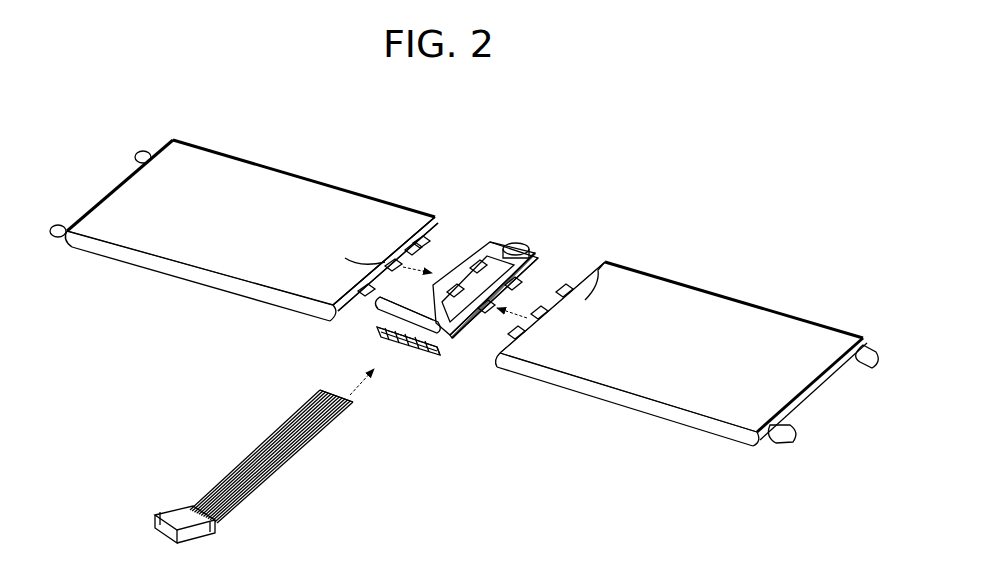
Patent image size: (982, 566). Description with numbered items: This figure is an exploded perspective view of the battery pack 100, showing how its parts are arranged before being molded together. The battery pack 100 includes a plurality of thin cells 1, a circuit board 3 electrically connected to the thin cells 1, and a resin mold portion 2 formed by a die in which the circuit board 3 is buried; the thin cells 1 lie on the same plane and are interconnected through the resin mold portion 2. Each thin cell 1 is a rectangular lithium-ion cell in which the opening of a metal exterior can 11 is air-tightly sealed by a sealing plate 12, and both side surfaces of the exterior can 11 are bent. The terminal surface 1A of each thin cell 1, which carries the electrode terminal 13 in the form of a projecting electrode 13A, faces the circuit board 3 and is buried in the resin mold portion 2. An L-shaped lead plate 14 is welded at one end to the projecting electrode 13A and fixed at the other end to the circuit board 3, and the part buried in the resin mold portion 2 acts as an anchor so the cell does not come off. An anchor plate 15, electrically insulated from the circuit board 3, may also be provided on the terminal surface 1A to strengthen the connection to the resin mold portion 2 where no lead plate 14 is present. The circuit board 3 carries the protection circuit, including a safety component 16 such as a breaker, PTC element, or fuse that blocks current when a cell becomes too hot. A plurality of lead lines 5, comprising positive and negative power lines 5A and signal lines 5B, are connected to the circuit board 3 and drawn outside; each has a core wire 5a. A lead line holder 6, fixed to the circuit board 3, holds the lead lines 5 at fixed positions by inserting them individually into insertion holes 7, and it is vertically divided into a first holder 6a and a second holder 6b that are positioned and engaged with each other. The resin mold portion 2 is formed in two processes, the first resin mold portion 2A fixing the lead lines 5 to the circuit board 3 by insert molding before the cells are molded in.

The battery pack 100 is at (652, 136).
The thin cell 1 is at (293, 147).
The exterior can 11 is at (246, 226).
The projecting electrode 13A is at (400, 262).
The electrode terminal 13 is at (366, 261).
The sealing plate 12 is at (410, 250).
The lead plate 14 is at (365, 268).
The anchor plate 15 is at (345, 258).
The circuit board 3 is at (470, 265).
The safety component 16 is at (523, 246).
The first resin mold portion 2A is at (532, 300).
The resin mold portion 2 is at (492, 294).
The terminal surface 1A is at (331, 369).
The lead line holder 6 is at (443, 378).
The insertion hole 7 is at (398, 333).
The first holder 6a is at (430, 350).
The second holder 6b is at (440, 350).
The lead line 5 is at (268, 444).
The power line 5A is at (325, 440).
The signal line 5B is at (305, 462).
The core wire 5a is at (340, 390).